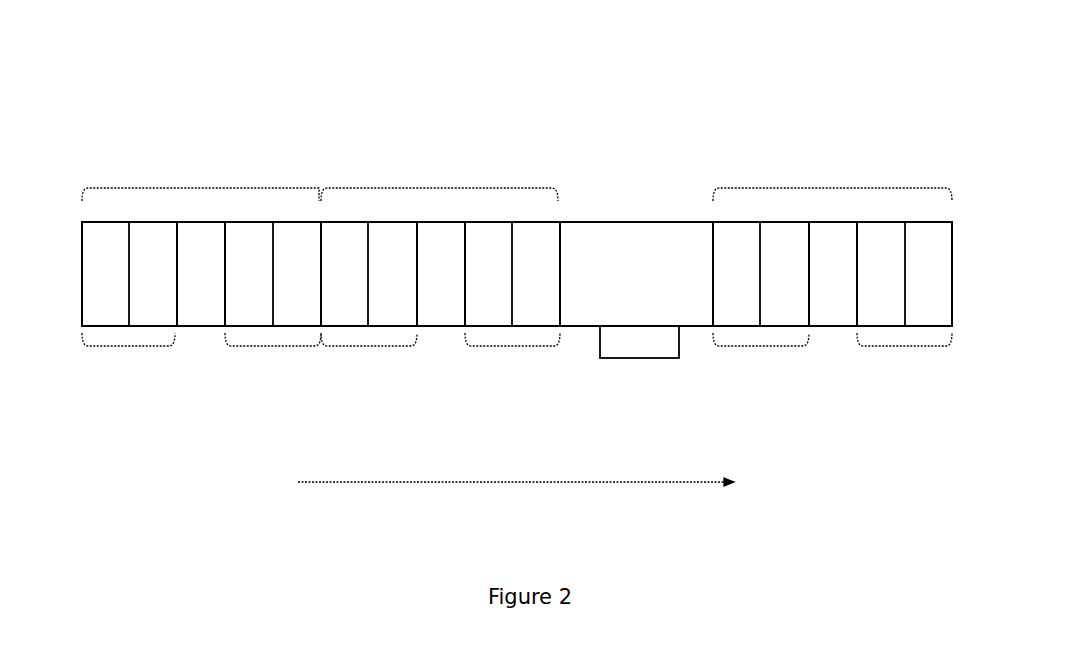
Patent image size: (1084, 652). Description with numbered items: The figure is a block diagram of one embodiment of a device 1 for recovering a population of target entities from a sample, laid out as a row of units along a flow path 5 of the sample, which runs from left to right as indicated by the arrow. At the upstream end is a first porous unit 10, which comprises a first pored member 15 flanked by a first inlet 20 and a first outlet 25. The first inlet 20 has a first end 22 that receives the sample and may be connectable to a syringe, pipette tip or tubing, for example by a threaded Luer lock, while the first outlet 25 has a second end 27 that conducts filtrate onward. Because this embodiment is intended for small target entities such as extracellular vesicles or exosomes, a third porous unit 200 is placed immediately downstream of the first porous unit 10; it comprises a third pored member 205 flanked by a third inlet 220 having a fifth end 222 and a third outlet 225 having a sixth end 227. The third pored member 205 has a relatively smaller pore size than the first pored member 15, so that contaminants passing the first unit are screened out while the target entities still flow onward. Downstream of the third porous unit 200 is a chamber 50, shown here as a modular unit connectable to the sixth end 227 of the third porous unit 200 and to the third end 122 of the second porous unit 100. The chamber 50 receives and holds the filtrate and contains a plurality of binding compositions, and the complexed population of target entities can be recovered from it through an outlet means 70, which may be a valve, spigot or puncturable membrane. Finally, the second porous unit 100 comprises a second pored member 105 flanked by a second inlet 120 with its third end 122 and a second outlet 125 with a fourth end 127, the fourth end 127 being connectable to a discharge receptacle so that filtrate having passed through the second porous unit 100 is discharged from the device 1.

The device 1 is at (102, 49).
The flow path 5 is at (516, 497).
The first porous unit 10 is at (205, 188).
The first pored member 15 is at (201, 274).
The first inlet 20 is at (134, 346).
The first end 22 is at (105, 274).
The first outlet 25 is at (279, 346).
The second end 27 is at (297, 274).
The chamber 50 is at (636, 274).
The outlet means 70 is at (639, 342).
The second porous unit 100 is at (826, 188).
The second pored member 105 is at (833, 274).
The second inlet 120 is at (767, 346).
The third end 122 is at (736, 274).
The second outlet 125 is at (911, 346).
The fourth end 127 is at (928, 274).
The third porous unit 200 is at (432, 188).
The third pored member 205 is at (441, 274).
The third inlet 220 is at (374, 346).
The fifth end 222 is at (344, 274).
The third outlet 225 is at (518, 346).
The sixth end 227 is at (536, 274).